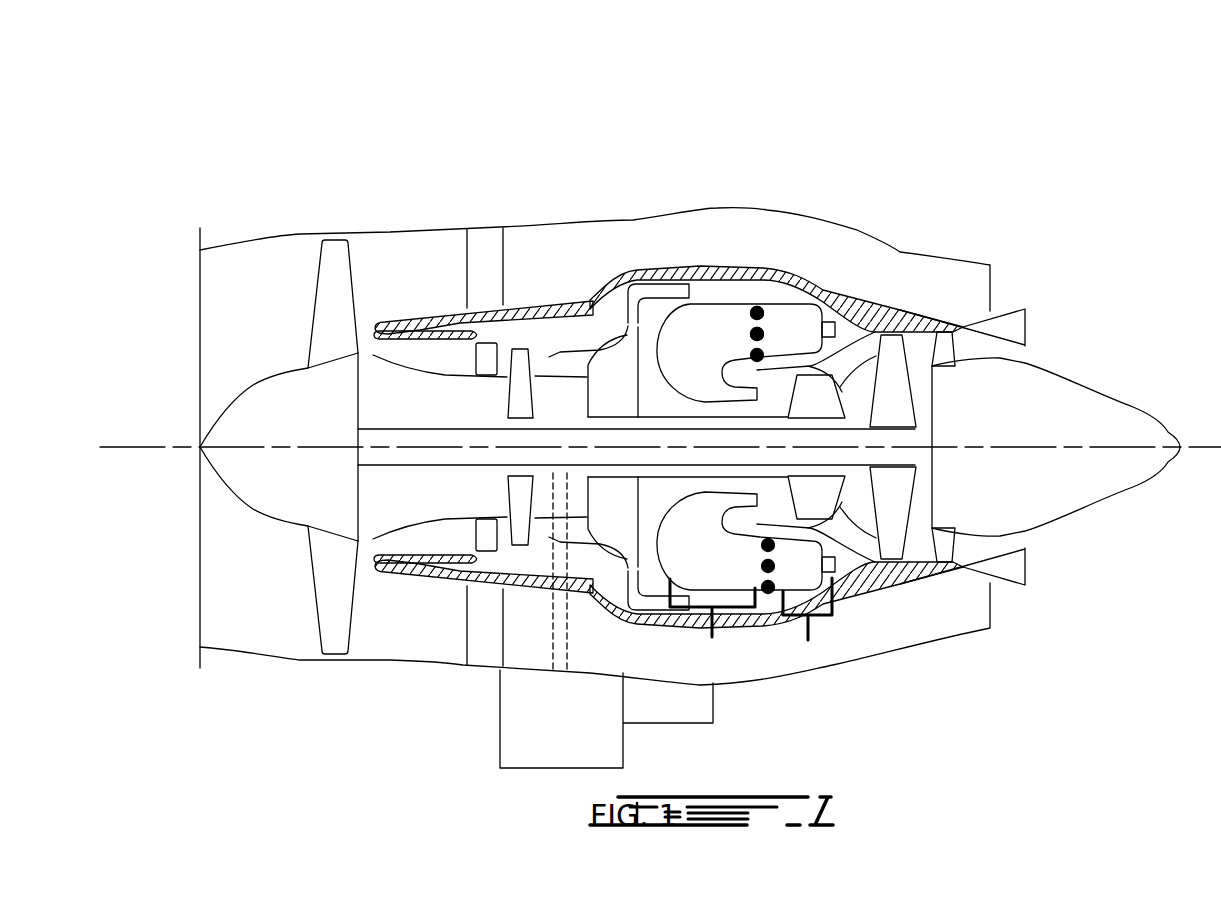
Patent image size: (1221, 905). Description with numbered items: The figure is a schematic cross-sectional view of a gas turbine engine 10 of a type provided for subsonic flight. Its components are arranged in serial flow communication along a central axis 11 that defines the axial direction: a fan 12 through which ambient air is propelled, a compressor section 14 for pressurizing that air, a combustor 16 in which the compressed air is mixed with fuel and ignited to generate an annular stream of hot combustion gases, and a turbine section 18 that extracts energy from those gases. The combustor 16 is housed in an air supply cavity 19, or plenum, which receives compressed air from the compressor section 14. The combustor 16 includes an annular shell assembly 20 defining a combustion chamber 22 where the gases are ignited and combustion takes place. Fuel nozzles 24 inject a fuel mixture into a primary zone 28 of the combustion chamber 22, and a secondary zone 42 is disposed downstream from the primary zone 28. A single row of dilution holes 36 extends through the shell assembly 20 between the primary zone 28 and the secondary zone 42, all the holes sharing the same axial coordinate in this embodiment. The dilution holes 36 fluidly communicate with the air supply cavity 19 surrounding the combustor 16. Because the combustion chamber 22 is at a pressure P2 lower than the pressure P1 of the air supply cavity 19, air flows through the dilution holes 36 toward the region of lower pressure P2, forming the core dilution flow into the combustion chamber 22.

The gas turbine engine 10 is at (872, 166).
The central axis 11 is at (1212, 447).
The fan 12 is at (332, 583).
The compressor section 14 is at (551, 358).
The combustor 16 is at (739, 322).
The turbine section 18 is at (855, 503).
The air supply cavity 19 is at (720, 301).
The shell assembly 20 is at (772, 304).
The combustion chamber 22 is at (712, 352).
The fuel nozzles 24 is at (835, 326).
The primary zone 28 is at (809, 632).
The dilution holes 36 is at (768, 592).
The secondary zone 42 is at (712, 628).
The pressure of the air supply cavity P1 is at (757, 297).
The pressure of the combustion chamber P2 is at (772, 326).